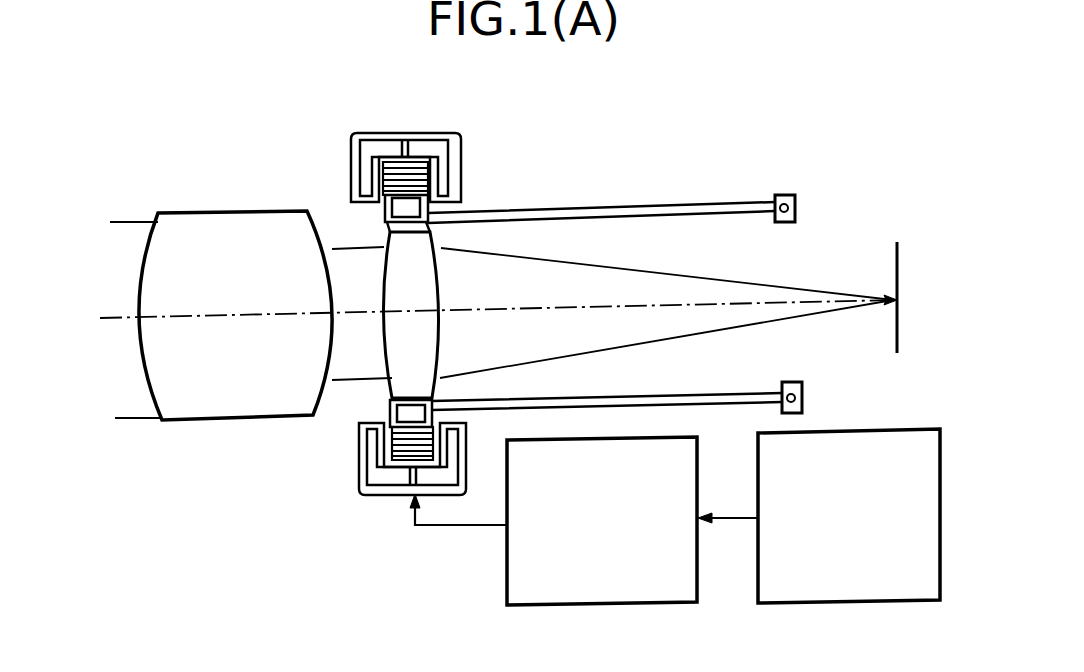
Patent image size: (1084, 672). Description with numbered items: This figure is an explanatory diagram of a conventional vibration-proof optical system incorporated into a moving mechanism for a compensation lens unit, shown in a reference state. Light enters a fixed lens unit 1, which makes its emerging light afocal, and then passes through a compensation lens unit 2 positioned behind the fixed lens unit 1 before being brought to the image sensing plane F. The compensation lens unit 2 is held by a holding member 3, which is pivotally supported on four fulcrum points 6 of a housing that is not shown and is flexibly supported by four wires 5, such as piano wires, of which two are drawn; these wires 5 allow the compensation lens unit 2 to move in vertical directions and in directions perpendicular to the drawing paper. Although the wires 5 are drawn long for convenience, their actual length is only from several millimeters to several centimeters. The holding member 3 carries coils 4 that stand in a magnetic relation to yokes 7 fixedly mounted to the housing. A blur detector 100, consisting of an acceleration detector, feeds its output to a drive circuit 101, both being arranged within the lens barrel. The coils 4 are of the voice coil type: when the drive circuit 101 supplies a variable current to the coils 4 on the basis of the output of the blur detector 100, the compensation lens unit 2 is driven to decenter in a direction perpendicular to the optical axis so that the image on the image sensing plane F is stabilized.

The fixed lens unit 1 is at (214, 213).
The compensation lens unit 2 is at (440, 296).
The holding member 3 is at (385, 222).
The coils 4 is at (412, 152).
The wires 5 is at (648, 206).
The fulcrum points 6 is at (784, 195).
The yokes 7 is at (462, 151).
The image sensing plane F is at (900, 268).
The blur detector 100 is at (835, 604).
The drive circuit 101 is at (623, 606).